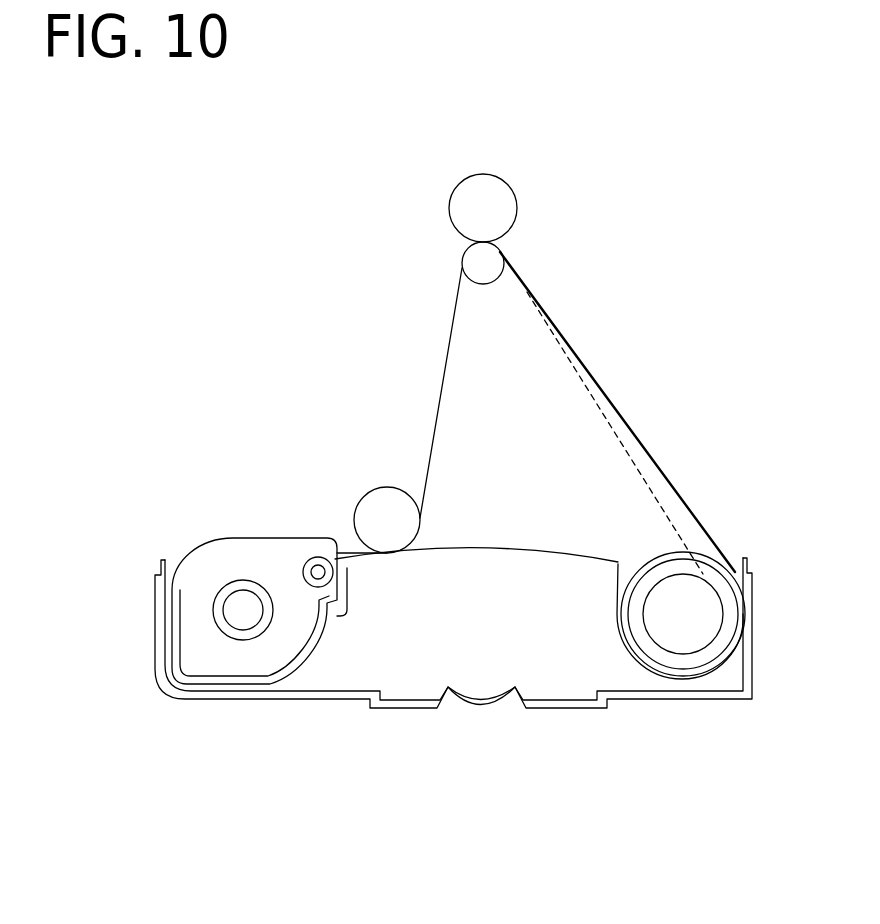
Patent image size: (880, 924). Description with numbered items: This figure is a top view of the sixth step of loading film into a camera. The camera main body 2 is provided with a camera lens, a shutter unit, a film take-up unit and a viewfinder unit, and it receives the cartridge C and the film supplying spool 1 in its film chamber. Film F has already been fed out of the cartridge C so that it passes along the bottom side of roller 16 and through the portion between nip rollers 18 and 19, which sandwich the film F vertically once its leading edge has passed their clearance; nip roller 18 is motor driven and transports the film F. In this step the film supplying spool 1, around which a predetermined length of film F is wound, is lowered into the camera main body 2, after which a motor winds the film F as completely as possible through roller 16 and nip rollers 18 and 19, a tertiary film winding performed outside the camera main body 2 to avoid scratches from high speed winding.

The film supplying spool 1 is at (670, 592).
The camera main body 2 is at (553, 708).
The roller 16 is at (385, 487).
The nip roller 18 is at (503, 180).
The nip roller 19 is at (482, 288).
The cartridge C is at (250, 537).
The film F is at (598, 388).